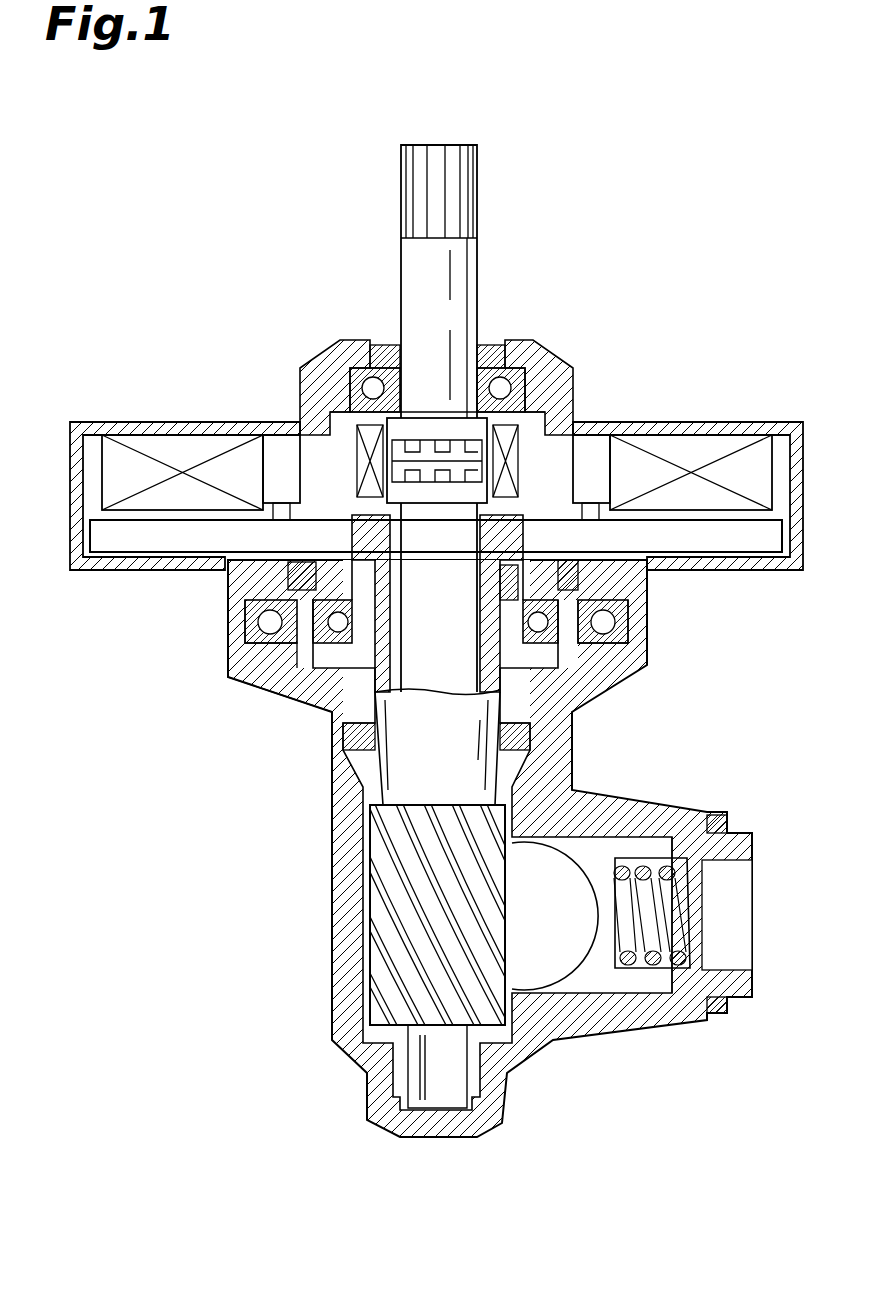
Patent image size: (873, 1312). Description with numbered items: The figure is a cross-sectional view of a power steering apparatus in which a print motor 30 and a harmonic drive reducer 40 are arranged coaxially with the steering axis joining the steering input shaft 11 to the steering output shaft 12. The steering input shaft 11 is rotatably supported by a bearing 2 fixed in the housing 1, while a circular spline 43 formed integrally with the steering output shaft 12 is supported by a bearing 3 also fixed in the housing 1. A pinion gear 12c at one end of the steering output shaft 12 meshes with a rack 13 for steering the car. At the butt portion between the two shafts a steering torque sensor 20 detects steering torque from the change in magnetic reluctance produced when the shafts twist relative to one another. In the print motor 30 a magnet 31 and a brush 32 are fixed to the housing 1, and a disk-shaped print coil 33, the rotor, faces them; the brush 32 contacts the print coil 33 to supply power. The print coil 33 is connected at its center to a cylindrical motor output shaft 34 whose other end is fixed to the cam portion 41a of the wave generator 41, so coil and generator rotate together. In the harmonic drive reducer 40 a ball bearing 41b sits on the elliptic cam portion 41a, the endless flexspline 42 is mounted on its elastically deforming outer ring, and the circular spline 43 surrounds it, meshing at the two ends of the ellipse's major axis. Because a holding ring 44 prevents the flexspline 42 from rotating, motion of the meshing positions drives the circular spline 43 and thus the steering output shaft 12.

The housing 1 is at (312, 355).
The bearing 2 is at (512, 365).
The bearing 3 is at (262, 625).
The steering input shaft 11 is at (405, 250).
The steering output shaft 12 is at (390, 785).
The pinion gear 12c is at (373, 957).
The rack 13 is at (560, 963).
The steering torque sensor 20 is at (573, 410).
The print motor 30 is at (92, 498).
The magnet 31 is at (157, 440).
The brush 32 is at (276, 440).
The print coil 33 is at (110, 545).
The motor output shaft 34 is at (490, 588).
The harmonic drive reducer 40 is at (620, 600).
The wave generator 41 is at (662, 715).
The cam portion 41a is at (560, 688).
The ball bearing 41b is at (338, 612).
The flexspline 42 is at (590, 596).
The circular spline 43 is at (298, 657).
The holding ring 44 is at (278, 578).